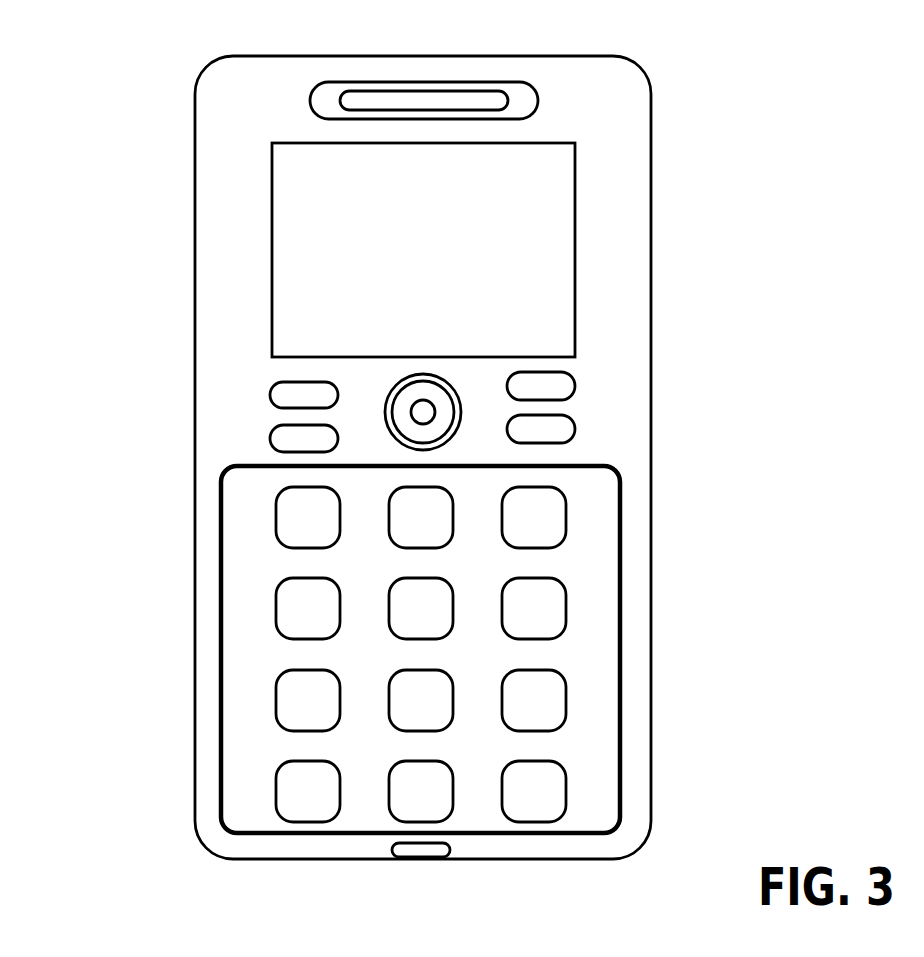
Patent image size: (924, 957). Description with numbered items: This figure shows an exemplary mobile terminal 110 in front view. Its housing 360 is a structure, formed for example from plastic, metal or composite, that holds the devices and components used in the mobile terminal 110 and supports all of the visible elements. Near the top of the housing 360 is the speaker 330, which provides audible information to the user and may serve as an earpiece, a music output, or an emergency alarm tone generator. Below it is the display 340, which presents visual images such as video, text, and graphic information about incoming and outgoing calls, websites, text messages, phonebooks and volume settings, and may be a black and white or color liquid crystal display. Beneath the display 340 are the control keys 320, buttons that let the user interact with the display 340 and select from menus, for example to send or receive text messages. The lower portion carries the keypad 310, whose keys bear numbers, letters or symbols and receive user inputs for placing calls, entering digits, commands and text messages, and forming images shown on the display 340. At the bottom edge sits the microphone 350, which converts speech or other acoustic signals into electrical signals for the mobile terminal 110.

The mobile terminal 110 is at (80, 308).
The keypad 310 is at (220, 590).
The control keys 320 is at (671, 362).
The speaker 330 is at (415, 97).
The display 340 is at (575, 307).
The microphone 350 is at (418, 851).
The housing 360 is at (651, 148).